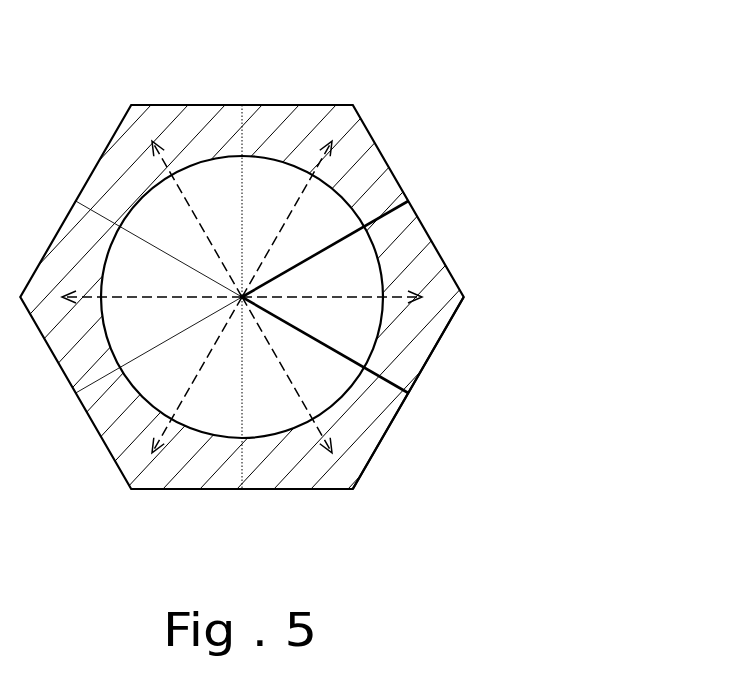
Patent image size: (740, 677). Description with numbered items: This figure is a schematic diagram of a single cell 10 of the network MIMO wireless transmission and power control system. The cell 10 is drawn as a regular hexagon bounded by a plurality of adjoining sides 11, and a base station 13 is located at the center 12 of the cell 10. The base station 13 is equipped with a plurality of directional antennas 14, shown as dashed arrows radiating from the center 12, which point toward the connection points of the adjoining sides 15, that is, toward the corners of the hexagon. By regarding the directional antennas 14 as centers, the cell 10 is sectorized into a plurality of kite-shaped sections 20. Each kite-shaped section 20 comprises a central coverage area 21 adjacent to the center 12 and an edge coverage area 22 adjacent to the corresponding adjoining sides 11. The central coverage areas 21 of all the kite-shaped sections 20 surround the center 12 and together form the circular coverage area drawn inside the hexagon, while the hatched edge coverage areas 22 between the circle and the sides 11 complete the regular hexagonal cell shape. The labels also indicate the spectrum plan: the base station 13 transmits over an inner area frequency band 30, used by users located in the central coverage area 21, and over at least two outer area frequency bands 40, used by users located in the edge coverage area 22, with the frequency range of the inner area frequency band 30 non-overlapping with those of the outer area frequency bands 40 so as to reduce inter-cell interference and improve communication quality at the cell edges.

The cell 10 is at (355, 104).
The adjoining side 11 is at (386, 153).
The center 12 is at (171, 258).
The base station 13 is at (242, 297).
The directional antenna 14 is at (337, 297).
The connection point of the adjoining sides 15 is at (464, 300).
The kite-shaped section 20 is at (450, 293).
The central coverage area 21 is at (423, 249).
The inner area frequency band 30 is at (362, 270).
The edge coverage area 22 is at (423, 329).
The outer area frequency band 40 is at (325, 345).